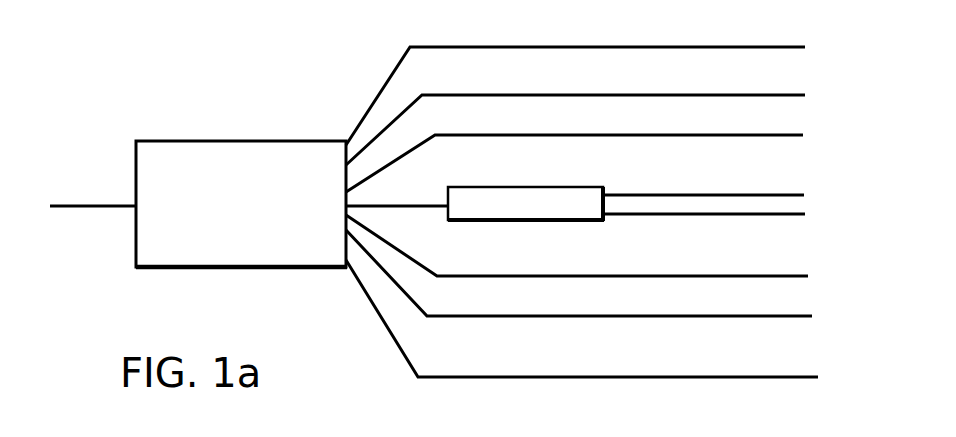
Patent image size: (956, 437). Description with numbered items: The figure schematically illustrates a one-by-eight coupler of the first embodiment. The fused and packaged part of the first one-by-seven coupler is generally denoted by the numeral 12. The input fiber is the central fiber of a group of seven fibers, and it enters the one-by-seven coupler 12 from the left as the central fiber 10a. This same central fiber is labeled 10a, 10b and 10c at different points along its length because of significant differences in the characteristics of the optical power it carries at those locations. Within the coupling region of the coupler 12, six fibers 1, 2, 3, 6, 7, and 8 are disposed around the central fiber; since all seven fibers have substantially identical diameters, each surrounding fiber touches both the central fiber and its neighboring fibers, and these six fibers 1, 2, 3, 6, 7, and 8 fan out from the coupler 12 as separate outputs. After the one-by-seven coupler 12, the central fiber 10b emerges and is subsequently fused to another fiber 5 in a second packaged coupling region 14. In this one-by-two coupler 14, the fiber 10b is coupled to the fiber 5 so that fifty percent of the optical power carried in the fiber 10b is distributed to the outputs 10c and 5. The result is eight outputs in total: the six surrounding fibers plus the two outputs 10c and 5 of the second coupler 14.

The fiber 1 is at (768, 47).
The fiber 2 is at (790, 93).
The fiber 3 is at (790, 135).
The fiber 5 is at (795, 215).
The fiber 6 is at (795, 278).
The fiber 7 is at (778, 317).
The fiber 8 is at (765, 378).
The central fiber 10a is at (80, 204).
The central fiber 10b is at (405, 205).
The central fiber 10c is at (752, 193).
The 1×7 coupler 12 is at (158, 140).
The 1×2 coupler 14 is at (515, 197).